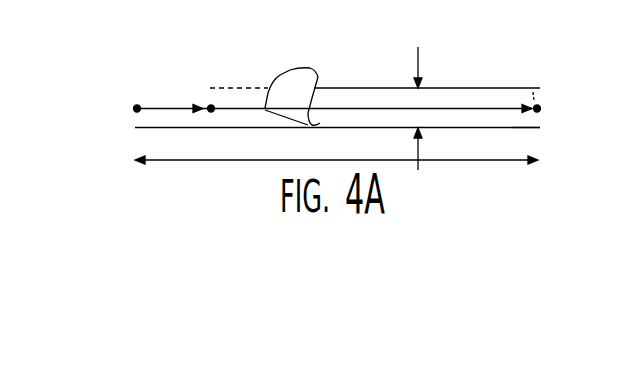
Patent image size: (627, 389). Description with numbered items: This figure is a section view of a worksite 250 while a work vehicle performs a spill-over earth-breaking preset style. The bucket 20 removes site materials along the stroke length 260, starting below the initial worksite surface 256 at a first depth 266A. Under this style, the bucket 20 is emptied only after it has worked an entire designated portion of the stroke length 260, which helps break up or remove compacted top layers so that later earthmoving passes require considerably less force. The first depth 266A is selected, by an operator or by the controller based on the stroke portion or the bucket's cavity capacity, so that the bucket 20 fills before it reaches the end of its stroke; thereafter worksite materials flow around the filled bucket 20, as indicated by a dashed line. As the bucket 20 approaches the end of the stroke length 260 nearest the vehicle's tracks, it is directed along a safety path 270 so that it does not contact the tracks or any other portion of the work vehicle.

The worksite 250 is at (170, 47).
The bucket 20 is at (275, 94).
The initial worksite surface 256 is at (465, 88).
The first depth 266A is at (418, 63).
The safety path 270 is at (513, 128).
The stroke length 260 is at (488, 162).